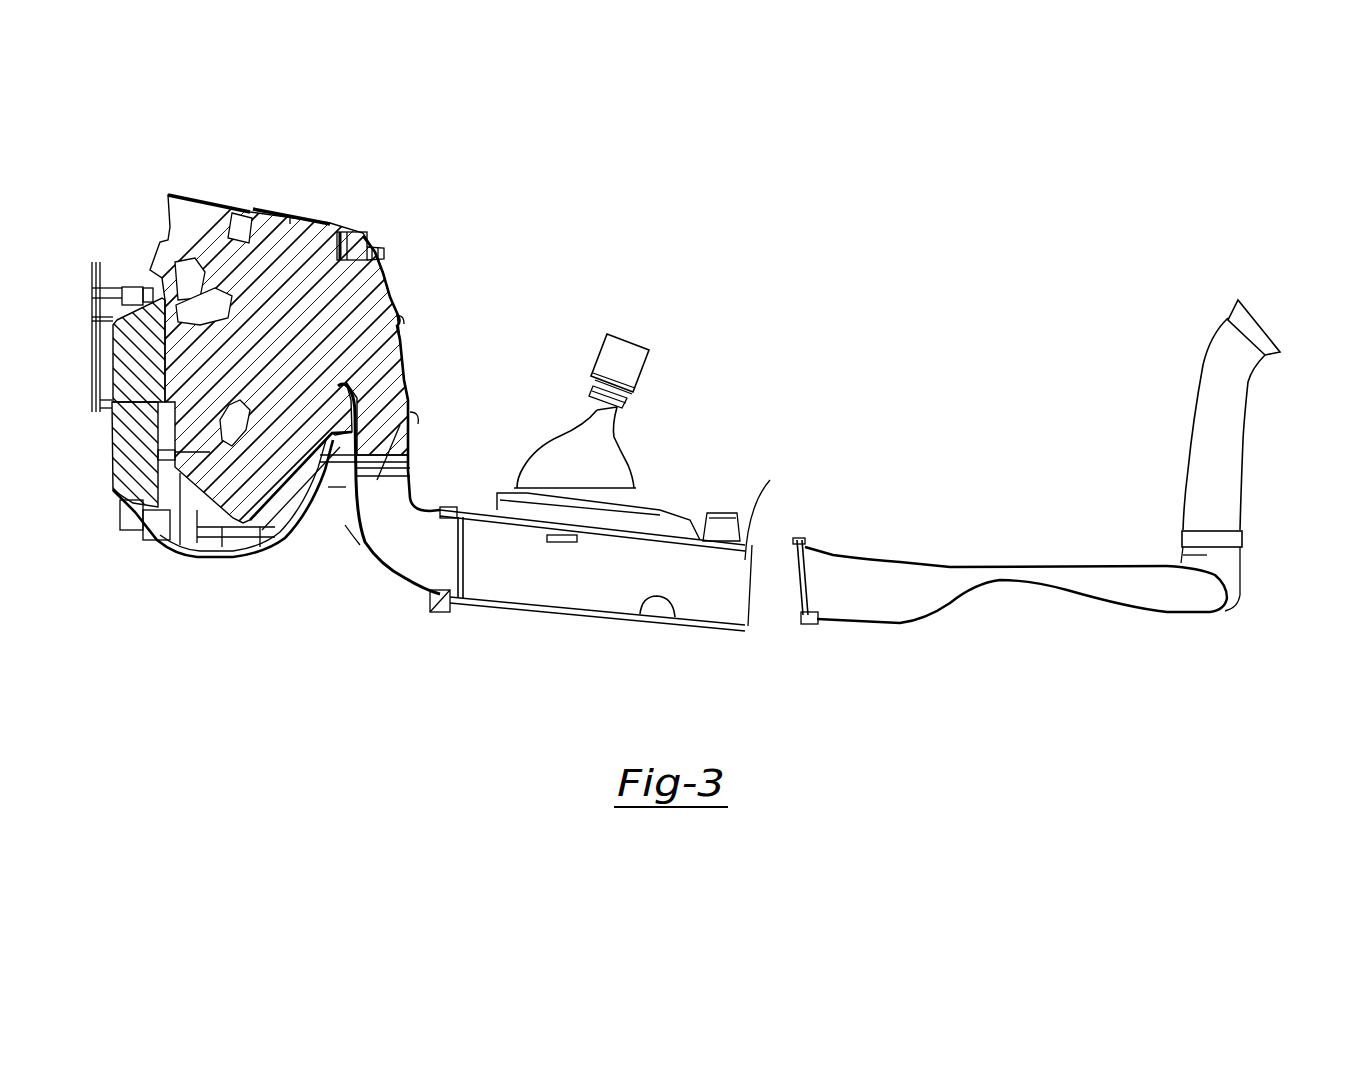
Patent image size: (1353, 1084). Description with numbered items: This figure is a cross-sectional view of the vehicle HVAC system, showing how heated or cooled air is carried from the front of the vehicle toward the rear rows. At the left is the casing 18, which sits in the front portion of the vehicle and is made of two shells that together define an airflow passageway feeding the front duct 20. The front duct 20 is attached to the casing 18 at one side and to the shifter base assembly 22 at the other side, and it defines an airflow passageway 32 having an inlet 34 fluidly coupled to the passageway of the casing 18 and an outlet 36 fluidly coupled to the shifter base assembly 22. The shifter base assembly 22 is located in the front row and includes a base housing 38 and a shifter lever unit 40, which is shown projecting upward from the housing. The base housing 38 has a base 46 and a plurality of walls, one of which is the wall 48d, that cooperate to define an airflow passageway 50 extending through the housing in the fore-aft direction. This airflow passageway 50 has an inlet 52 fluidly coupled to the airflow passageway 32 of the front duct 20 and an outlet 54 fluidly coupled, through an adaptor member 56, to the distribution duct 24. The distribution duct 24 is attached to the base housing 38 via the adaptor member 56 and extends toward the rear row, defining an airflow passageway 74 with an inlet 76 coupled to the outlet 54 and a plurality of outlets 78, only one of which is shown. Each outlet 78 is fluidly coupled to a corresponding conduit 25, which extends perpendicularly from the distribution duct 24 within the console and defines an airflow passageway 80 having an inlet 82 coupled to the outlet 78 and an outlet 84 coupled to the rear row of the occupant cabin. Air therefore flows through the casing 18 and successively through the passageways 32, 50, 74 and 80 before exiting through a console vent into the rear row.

The casing 18 is at (398, 265).
The front duct 20 is at (383, 558).
The shifter base assembly 22 is at (690, 430).
The distribution duct 24 is at (972, 566).
The conduit 25 is at (1205, 333).
The airflow passageway 32 is at (352, 528).
The inlet 34 is at (410, 395).
The outlet 36 is at (437, 565).
The base housing 38 is at (590, 610).
The shifter lever unit 40 is at (540, 432).
The base 46 is at (670, 620).
The wall 48d is at (700, 516).
The airflow passageway 50 is at (560, 567).
The inlet 52 is at (477, 553).
The outlet 54 is at (748, 540).
The adaptor member 56 is at (777, 620).
The airflow passageway 74 is at (937, 583).
The inlet 76 is at (813, 573).
The outlet 78 is at (1180, 557).
The airflow passageway 80 is at (1217, 468).
The inlet 82 is at (1225, 528).
The outlet 84 is at (1252, 323).